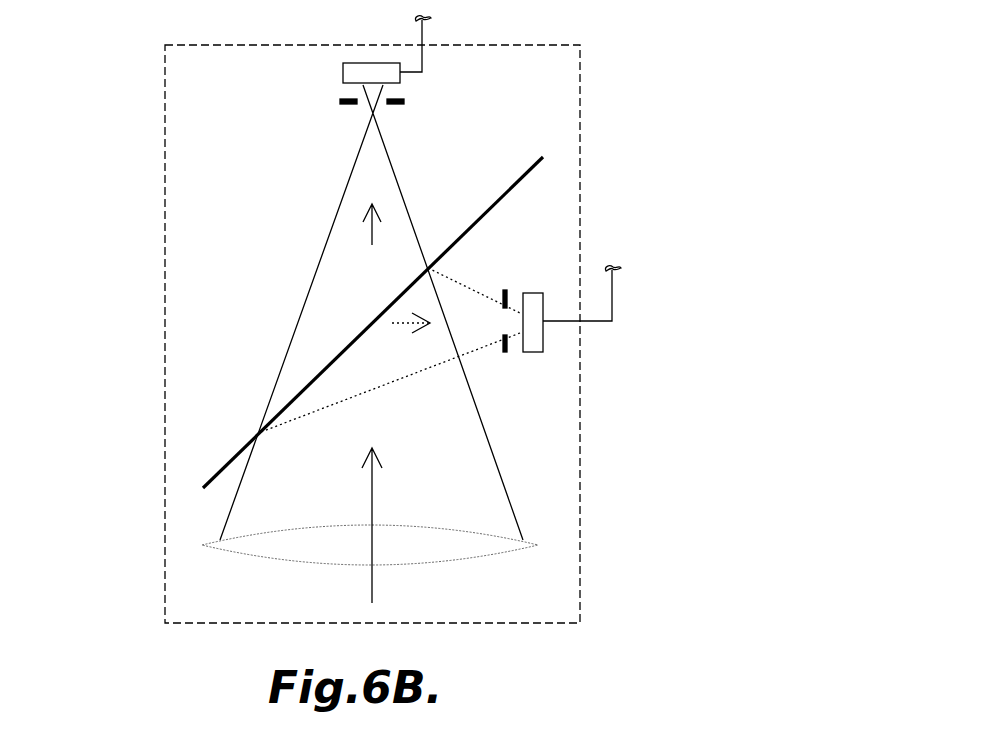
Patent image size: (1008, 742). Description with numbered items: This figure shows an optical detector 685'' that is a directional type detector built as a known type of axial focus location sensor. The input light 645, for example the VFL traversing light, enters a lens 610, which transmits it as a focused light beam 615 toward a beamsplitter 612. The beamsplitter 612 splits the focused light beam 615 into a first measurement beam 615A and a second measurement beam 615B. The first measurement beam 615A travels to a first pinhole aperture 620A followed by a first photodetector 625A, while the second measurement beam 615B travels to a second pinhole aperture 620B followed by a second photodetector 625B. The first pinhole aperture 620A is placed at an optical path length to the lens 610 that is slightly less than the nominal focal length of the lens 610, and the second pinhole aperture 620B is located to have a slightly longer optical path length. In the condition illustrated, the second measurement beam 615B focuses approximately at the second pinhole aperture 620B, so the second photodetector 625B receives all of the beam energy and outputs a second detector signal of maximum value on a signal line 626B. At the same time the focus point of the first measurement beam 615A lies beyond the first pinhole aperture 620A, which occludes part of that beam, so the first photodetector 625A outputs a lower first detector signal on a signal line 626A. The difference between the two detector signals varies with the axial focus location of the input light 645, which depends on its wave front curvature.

The optical detector 685'' is at (306, 334).
The signal line 626B is at (422, 72).
The second photodetector 625B is at (343, 72).
The second pinhole aperture 620B is at (352, 105).
The second measurement beam 615B is at (368, 228).
The beamsplitter 612 is at (222, 470).
The first photodetector 625A is at (543, 338).
The first pinhole aperture 620A is at (507, 352).
The signal line 626A is at (612, 299).
The first measurement beam 615A is at (398, 327).
The lens 610 is at (538, 545).
The input light 645 is at (372, 583).
The focused light beam 615 is at (372, 498).